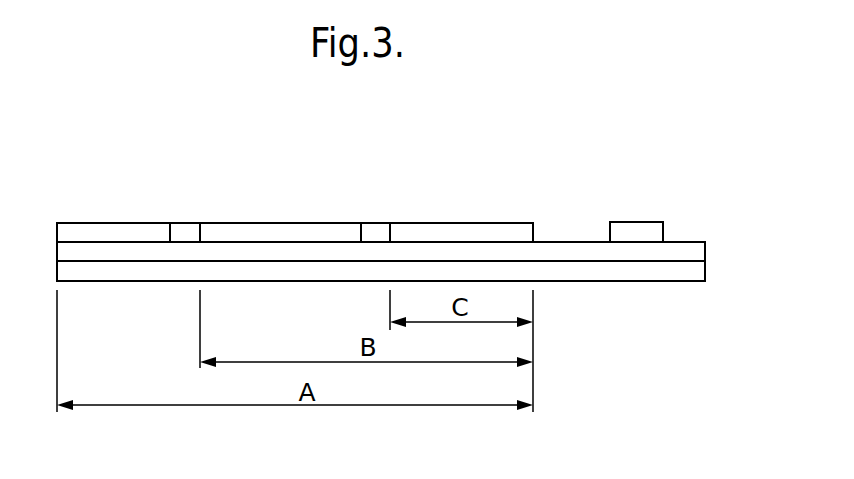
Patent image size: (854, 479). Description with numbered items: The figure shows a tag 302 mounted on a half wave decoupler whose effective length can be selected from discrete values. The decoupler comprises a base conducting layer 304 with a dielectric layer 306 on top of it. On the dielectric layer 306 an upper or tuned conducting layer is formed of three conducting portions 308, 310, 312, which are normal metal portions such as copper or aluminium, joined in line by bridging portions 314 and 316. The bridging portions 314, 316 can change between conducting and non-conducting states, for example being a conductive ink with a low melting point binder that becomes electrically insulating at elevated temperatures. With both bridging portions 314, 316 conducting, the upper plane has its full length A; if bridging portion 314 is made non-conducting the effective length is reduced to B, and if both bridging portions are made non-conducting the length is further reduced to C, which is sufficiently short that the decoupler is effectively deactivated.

The tag 302 is at (645, 228).
The base conducting layer 304 is at (697, 273).
The dielectric layer 306 is at (695, 250).
The first conducting portion 308 is at (78, 230).
The second conducting portion 310 is at (278, 232).
The third conducting portion 312 is at (498, 230).
The first bridging portion 314 is at (183, 232).
The second bridging portion 316 is at (373, 230).